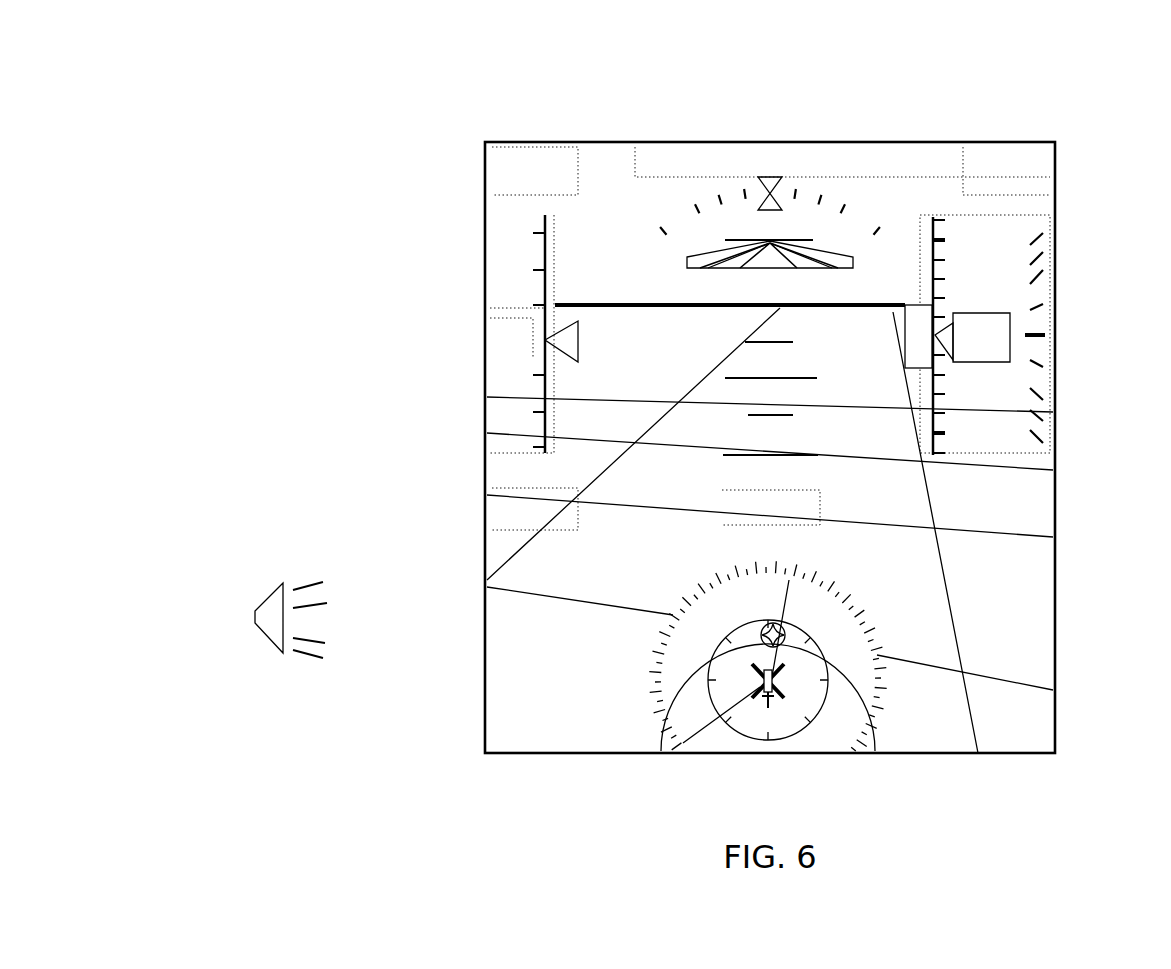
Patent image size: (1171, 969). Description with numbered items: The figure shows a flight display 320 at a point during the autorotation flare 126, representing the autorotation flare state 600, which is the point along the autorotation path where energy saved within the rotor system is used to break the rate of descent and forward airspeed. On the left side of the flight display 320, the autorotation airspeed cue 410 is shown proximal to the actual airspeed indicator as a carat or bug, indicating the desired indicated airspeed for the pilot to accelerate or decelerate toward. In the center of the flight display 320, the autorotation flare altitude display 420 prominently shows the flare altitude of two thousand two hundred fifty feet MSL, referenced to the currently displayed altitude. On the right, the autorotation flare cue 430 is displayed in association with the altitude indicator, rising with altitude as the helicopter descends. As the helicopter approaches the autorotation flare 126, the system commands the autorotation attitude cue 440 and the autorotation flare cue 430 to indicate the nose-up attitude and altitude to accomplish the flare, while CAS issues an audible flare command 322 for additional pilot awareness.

The autorotation flare state 600 is at (203, 117).
The flight display 320 is at (1017, 142).
The autorotation flare 126 is at (771, 103).
The autorotation attitude cue 440 is at (810, 262).
The autorotation airspeed cue 410 is at (545, 340).
The autorotation flare cue 430 is at (920, 370).
The autorotation flare altitude display 420 is at (820, 510).
The audible flare command 322 is at (277, 645).